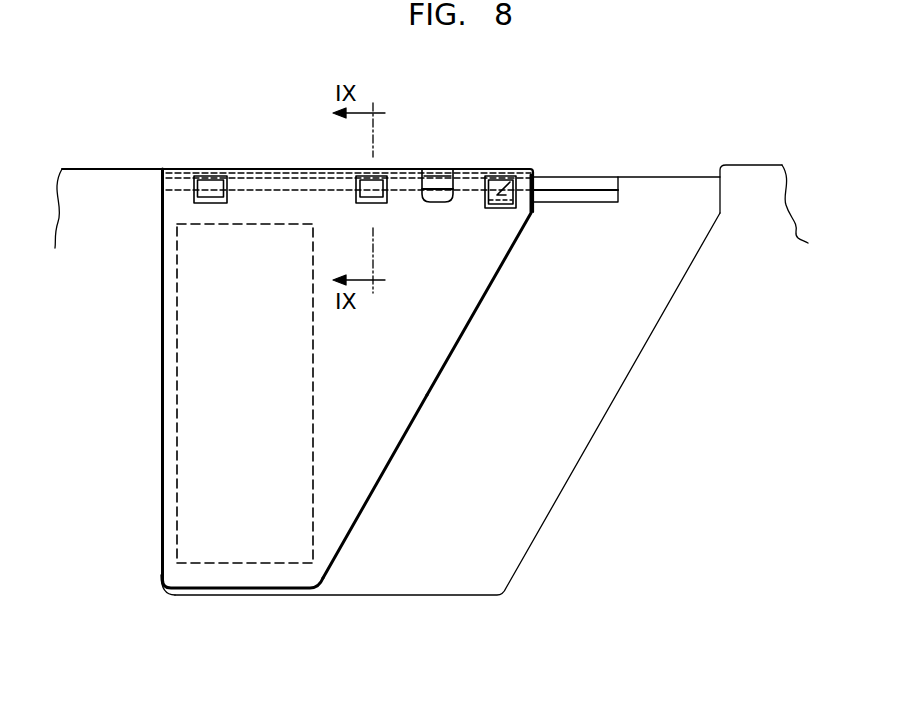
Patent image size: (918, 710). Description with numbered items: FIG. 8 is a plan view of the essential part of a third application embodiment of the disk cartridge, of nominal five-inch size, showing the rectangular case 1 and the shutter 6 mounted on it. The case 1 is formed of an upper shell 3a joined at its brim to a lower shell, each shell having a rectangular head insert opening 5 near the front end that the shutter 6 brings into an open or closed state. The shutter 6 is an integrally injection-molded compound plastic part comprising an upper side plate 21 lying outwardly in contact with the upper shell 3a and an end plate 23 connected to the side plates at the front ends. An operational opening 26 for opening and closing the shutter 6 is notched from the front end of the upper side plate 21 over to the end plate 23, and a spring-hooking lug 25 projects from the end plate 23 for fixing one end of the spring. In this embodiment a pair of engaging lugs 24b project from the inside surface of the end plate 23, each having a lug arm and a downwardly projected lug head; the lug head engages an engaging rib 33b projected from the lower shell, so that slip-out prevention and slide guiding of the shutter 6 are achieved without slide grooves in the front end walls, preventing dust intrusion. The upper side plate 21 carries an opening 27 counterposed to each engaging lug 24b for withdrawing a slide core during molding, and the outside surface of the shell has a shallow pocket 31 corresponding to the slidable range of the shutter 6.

The case 1 is at (748, 177).
The upper shell 3a is at (788, 197).
The head insert opening 5 is at (312, 540).
The shutter 6 is at (368, 460).
The upper side plate 21 is at (435, 352).
The end plate 23 is at (275, 168).
The engaging lug 24b is at (213, 204).
The spring-hooking lug 25 is at (494, 181).
The operational opening 26 is at (449, 181).
The opening 27 is at (201, 185).
The pocket 31 is at (596, 428).
The engaging rib 33b is at (582, 190).